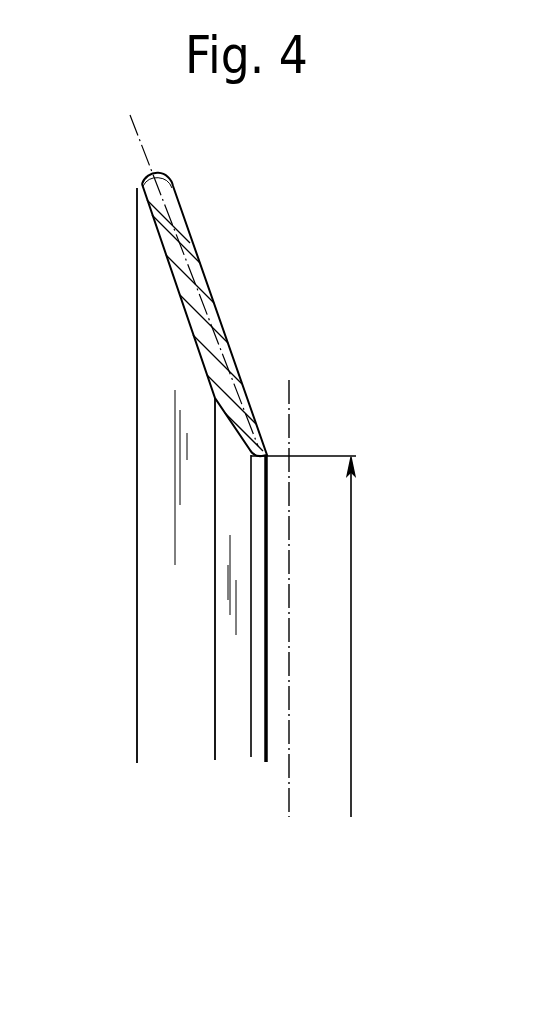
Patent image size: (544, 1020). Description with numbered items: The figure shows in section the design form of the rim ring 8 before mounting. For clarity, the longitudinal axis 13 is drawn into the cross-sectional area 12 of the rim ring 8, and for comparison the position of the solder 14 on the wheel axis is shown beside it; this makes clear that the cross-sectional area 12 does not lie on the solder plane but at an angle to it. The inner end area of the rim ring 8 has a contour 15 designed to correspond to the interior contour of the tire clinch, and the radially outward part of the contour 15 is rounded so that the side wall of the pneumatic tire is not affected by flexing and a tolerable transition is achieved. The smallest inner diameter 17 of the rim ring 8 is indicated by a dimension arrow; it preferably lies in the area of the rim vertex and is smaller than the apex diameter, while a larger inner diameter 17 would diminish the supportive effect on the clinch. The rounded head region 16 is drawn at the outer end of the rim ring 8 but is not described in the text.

The rim ring 8 is at (157, 602).
The cross-sectional area 12 is at (217, 347).
The longitudinal axis 13 is at (138, 135).
The solder 14 is at (292, 405).
The contour 15 is at (243, 437).
The rounded pin head 16 is at (155, 190).
The smallest inner diameter 17 is at (351, 576).